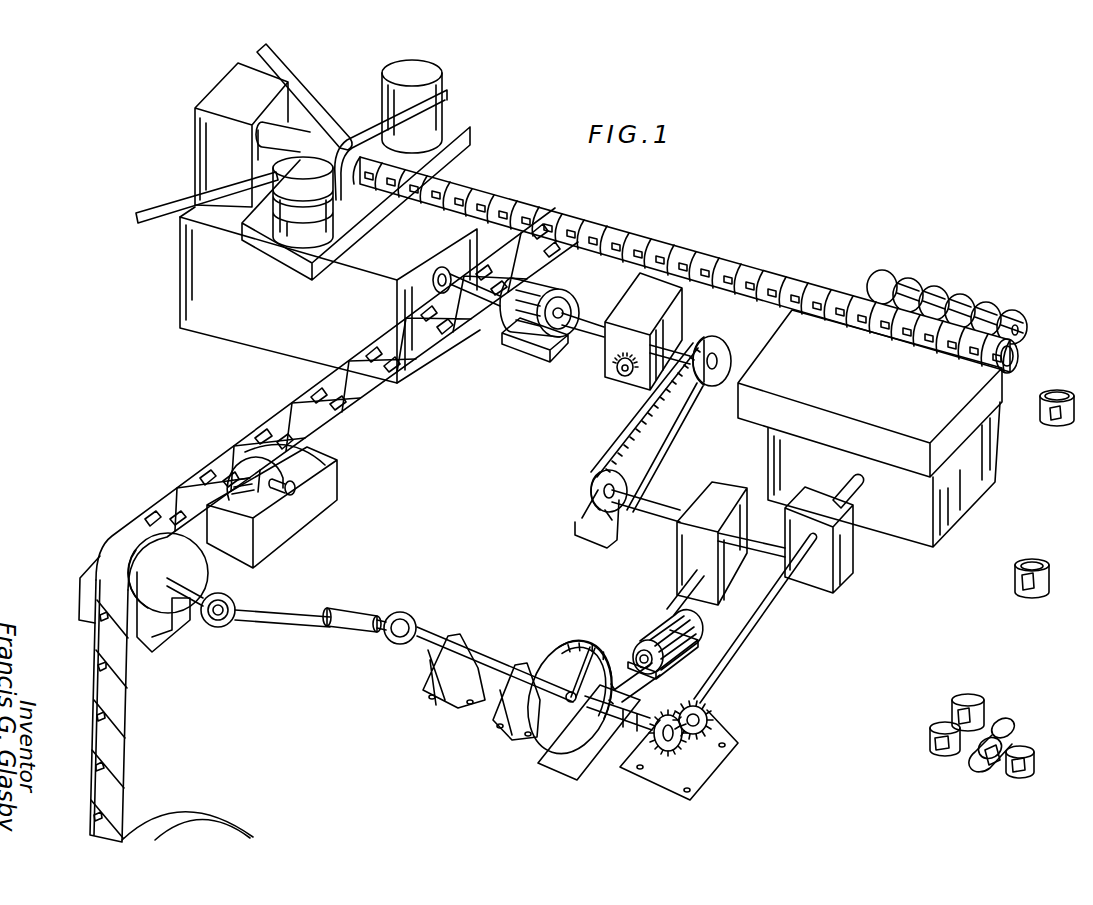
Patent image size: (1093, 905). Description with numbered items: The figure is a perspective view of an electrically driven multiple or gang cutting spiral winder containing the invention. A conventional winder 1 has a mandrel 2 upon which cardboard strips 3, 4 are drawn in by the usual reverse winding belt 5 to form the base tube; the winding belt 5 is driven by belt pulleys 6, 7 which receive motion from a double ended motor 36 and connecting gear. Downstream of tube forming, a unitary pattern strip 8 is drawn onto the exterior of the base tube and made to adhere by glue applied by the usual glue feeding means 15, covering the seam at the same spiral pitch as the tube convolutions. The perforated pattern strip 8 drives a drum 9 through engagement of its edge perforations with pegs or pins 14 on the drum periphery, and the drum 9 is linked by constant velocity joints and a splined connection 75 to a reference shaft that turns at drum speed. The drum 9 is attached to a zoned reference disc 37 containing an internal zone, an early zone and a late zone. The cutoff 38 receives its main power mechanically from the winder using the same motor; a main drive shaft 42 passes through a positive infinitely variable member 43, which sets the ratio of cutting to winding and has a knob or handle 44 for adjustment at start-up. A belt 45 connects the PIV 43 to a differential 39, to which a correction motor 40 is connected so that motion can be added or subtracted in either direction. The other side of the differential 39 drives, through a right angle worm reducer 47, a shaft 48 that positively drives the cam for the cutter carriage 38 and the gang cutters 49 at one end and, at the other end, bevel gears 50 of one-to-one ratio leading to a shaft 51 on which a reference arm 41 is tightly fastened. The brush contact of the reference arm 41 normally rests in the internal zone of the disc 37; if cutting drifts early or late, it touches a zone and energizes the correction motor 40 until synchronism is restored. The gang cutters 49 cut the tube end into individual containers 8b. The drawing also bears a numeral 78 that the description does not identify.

The winder 1 is at (212, 340).
The mandrel 2 is at (262, 140).
The cardboard strip 3 is at (150, 212).
The cardboard strip 4 is at (300, 96).
The reverse winding belt 5 is at (443, 112).
The belt pulley 6 is at (312, 165).
The belt pulley 7 is at (418, 70).
The pattern strip 8 is at (333, 410).
The individual containers 8b is at (1056, 392).
The drum 9 is at (150, 623).
The pegs or pins 14 is at (112, 540).
The glue feeding means 15 is at (300, 520).
The double ended motor 36 is at (500, 325).
The reference disc 37 is at (545, 735).
The cutoff 38 is at (886, 386).
The differential 39 is at (733, 492).
The correction motor 40 is at (640, 634).
The reference arm 41 is at (595, 645).
The main drive shaft 42 is at (712, 348).
The positive infinitely variable member 43 is at (625, 282).
The knob or handle 44 is at (620, 372).
The belt 45 is at (628, 425).
The right angle worm reducer 47 is at (850, 553).
The shaft 48 is at (757, 645).
The gang cutters 49 is at (990, 300).
The bevel gears 50 is at (706, 718).
The shaft 51 is at (594, 752).
The splined connection 75 is at (310, 632).
The arc 78 is at (185, 808).